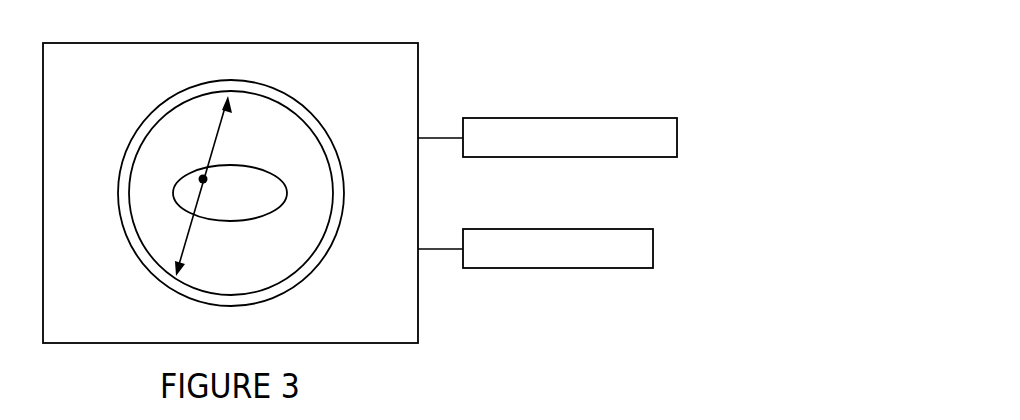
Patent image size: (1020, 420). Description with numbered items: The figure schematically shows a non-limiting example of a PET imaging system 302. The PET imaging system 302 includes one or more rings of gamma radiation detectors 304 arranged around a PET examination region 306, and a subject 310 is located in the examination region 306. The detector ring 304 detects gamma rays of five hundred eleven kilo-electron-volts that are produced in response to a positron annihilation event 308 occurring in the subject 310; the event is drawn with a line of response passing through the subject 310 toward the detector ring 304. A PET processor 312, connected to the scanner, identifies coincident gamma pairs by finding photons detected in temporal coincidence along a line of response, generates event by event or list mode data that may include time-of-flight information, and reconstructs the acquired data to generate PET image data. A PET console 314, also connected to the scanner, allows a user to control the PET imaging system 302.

The PET imaging system 302 is at (230, 43).
The ring of gamma radiation detectors 304 is at (297, 99).
The PET examination region 306 is at (251, 261).
The positron annihilation event 308 is at (202, 177).
The subject 310 is at (287, 193).
The PET processor 312 is at (572, 118).
The PET console 314 is at (558, 229).